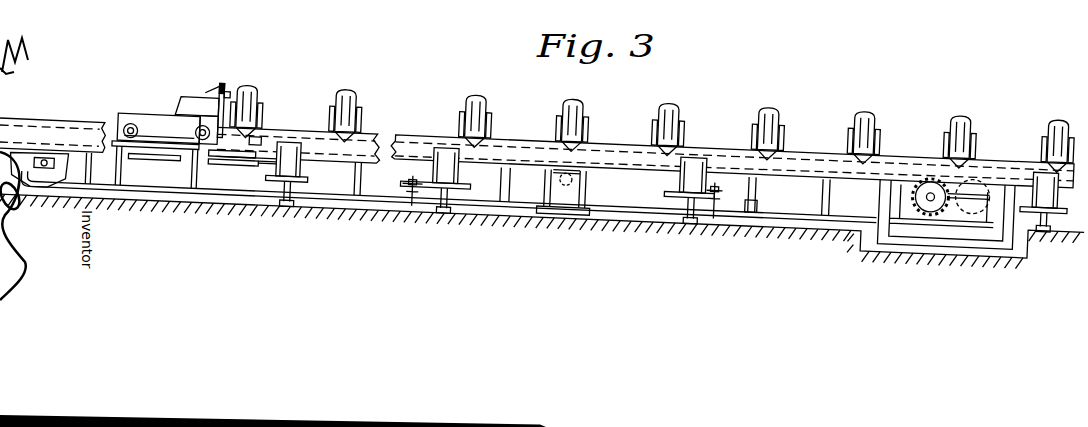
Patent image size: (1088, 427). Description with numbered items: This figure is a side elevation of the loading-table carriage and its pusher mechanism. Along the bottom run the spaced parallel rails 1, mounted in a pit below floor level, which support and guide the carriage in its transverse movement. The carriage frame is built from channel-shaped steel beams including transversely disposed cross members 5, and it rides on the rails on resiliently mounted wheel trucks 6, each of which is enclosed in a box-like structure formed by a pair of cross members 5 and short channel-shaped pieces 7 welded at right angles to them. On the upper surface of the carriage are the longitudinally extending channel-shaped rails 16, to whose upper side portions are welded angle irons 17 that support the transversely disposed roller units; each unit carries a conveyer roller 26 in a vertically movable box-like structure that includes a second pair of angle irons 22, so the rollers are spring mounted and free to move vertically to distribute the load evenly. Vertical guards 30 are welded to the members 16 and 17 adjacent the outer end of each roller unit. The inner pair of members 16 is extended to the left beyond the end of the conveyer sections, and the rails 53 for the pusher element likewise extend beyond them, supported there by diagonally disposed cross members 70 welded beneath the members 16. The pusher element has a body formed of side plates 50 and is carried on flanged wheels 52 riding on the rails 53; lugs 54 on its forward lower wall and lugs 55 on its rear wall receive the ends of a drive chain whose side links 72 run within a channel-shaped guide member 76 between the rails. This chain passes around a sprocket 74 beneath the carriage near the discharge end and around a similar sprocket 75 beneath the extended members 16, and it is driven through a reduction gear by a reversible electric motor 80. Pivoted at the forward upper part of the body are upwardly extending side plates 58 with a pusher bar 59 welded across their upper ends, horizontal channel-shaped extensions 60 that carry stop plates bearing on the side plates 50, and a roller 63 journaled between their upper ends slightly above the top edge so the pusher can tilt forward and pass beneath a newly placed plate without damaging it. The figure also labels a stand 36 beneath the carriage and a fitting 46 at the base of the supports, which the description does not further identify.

The rails 1 is at (286, 221).
The cross members 5 is at (264, 165).
The wheel trucks 6 is at (288, 195).
The channel-shaped pieces 7 is at (293, 130).
The channel-shaped rails 16 is at (66, 119).
The angle iron 17 is at (321, 117).
The angle irons 22 is at (259, 126).
The conveyer roller 26 is at (470, 76).
The vertical guards 30 is at (347, 109).
The pulley stand 36 is at (584, 167).
The adjusting screw 46 is at (417, 194).
The side plates 50 is at (150, 110).
The flanged wheels 52 is at (127, 119).
The rails 53 is at (158, 135).
The lugs 54 is at (188, 163).
The lugs 55 is at (103, 170).
The side plates 58 is at (216, 80).
The pusher bar 59 is at (228, 84).
The channel-shaped extension 60 is at (184, 104).
The roller 63 is at (220, 73).
The cross members 70 is at (230, 218).
The side links 72 is at (39, 207).
The sprocket 74 is at (941, 176).
The sprocket 75 is at (39, 154).
The channel-shaped member 76 is at (128, 187).
The reversible electric motor 80 is at (976, 207).